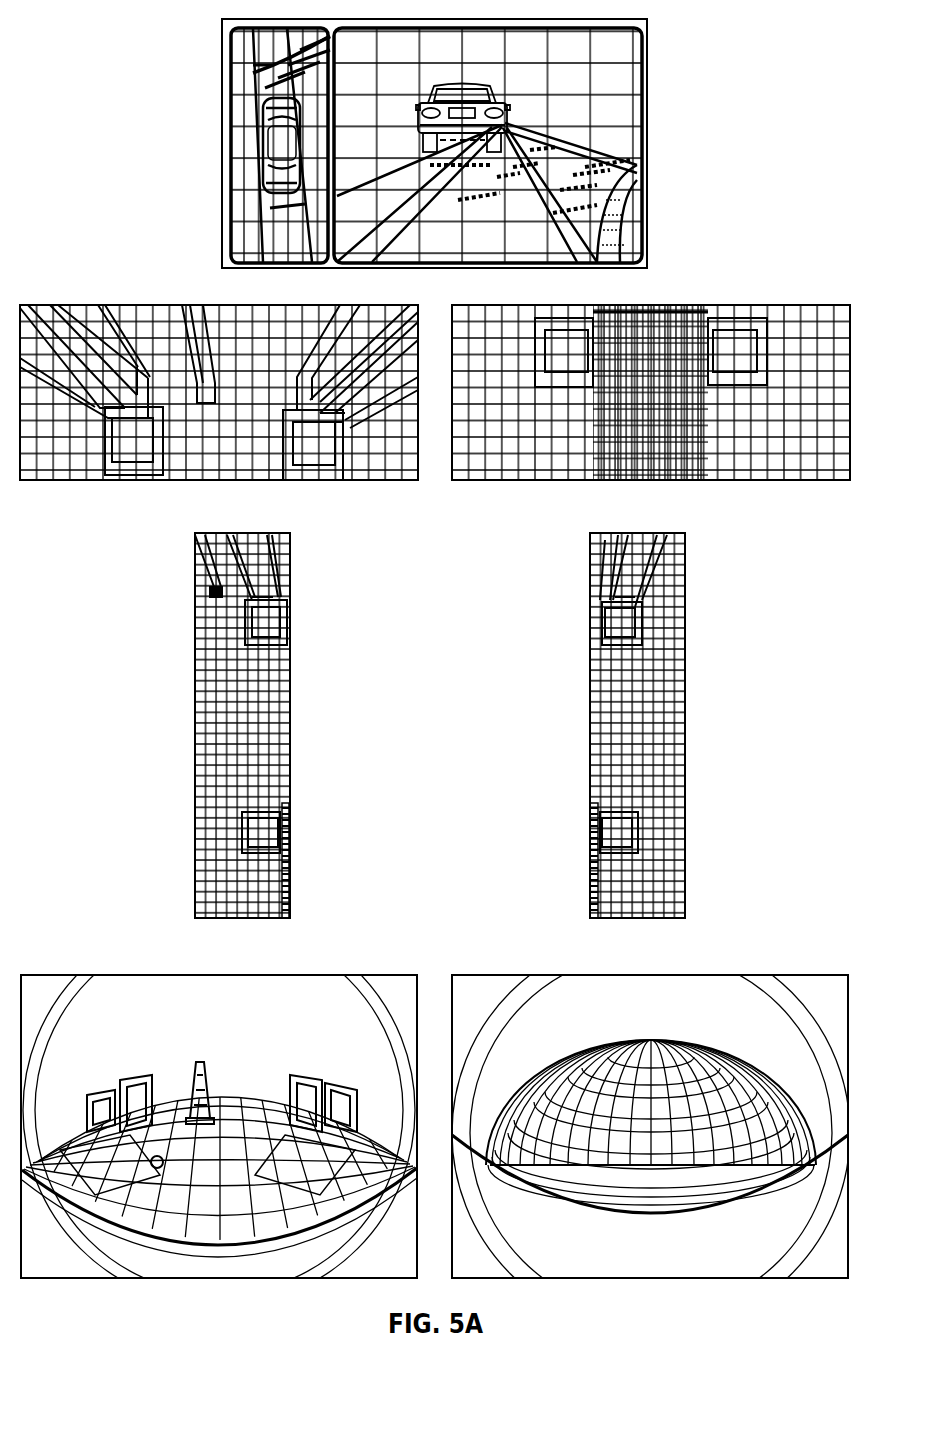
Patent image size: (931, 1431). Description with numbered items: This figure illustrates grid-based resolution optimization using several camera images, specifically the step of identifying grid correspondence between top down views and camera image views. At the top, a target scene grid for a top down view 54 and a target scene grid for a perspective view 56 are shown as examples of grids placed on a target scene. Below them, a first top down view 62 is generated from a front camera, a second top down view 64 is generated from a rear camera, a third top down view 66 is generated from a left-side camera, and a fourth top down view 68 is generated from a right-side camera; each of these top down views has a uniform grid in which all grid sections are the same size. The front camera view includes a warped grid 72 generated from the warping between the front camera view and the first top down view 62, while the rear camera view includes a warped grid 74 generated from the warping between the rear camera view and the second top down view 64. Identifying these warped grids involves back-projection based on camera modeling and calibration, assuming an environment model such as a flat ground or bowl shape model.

The target scene grid for a top down view 54 is at (231, 60).
The target scene grid for a perspective view 56 is at (644, 58).
The first top down view 62 is at (72, 304).
The second top down view 64 is at (800, 303).
The third top down view 66 is at (262, 532).
The fourth top down view 68 is at (608, 533).
The warped grid 72 is at (180, 1093).
The warped grid 74 is at (590, 1055).